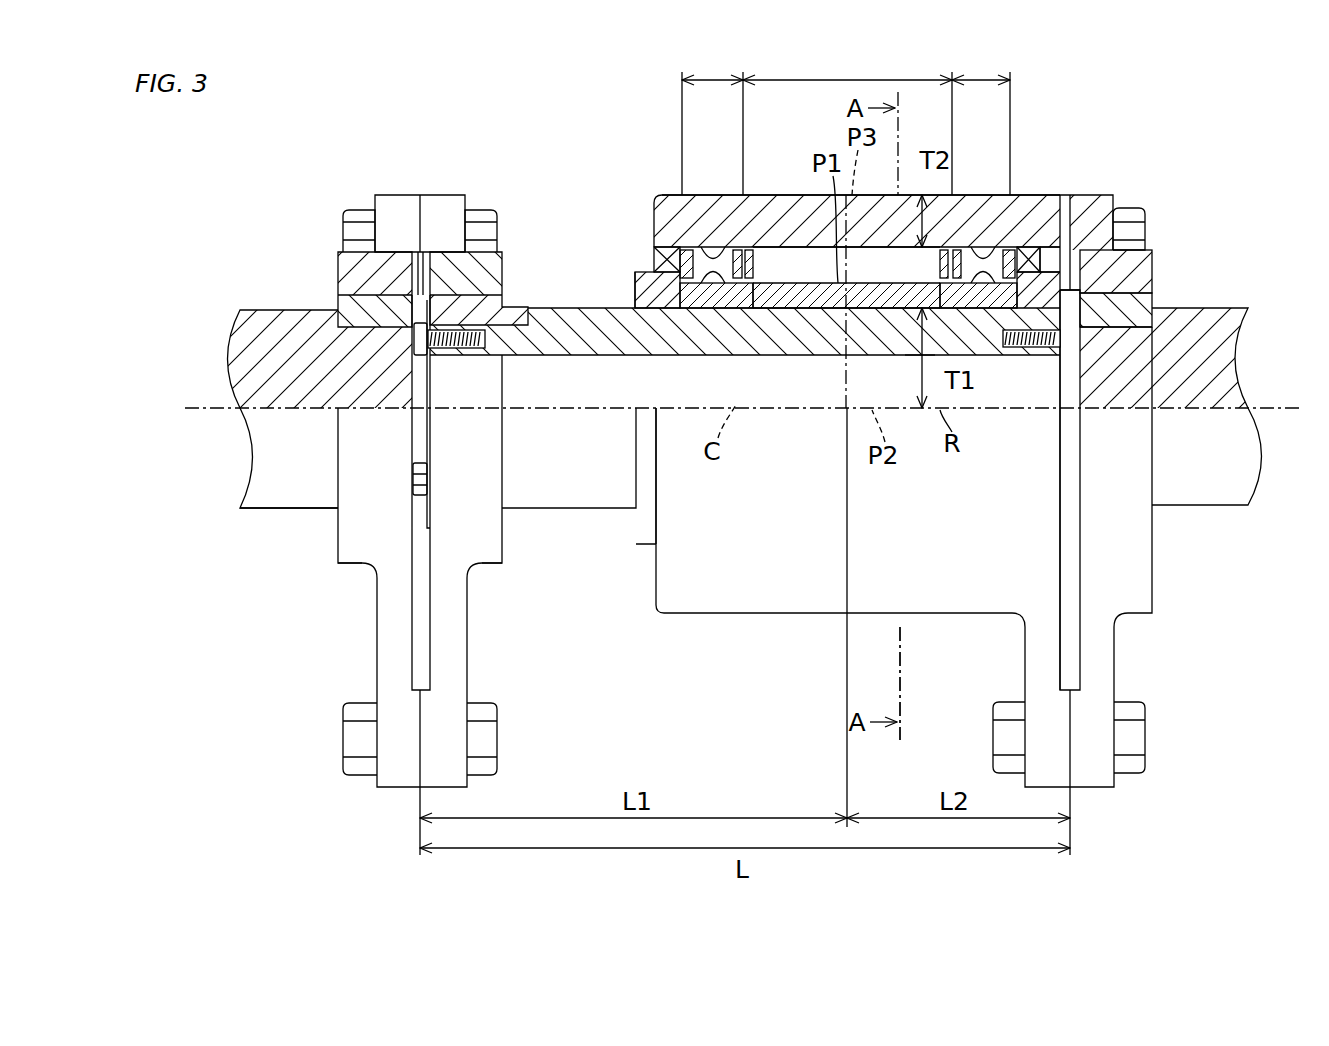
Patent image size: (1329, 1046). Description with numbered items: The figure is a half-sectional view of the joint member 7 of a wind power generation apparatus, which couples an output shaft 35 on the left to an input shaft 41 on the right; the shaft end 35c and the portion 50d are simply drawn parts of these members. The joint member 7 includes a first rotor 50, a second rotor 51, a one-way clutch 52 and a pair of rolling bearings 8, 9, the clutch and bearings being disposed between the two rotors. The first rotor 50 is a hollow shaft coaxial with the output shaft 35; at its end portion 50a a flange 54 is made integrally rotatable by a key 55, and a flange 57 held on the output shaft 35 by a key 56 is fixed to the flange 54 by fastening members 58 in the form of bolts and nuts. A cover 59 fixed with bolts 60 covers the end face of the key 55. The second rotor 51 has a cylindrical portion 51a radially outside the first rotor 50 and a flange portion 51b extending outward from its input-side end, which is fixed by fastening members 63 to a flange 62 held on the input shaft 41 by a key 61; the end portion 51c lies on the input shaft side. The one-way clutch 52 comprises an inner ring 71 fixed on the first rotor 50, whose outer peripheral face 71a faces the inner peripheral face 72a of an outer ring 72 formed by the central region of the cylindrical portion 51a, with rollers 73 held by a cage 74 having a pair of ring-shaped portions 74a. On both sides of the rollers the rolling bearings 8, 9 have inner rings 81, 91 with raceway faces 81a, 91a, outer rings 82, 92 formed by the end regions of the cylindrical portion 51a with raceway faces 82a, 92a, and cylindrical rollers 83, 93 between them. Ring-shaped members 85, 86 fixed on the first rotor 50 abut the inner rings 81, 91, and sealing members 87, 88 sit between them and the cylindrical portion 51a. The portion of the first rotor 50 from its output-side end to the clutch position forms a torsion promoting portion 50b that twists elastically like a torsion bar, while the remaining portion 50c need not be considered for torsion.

The output shaft 35 is at (247, 283).
The shaft end portion 35c is at (298, 490).
The input shaft 41 is at (1240, 285).
The first rotor 50 is at (570, 298).
The end portion 50a is at (437, 383).
The torsion promoting portion 50b is at (603, 385).
The remaining portion 50c is at (918, 410).
The hub flange 50d is at (1050, 377).
The second rotor 51 is at (907, 193).
The cylindrical portion 51a is at (788, 193).
The flange portion 51b is at (1058, 650).
The end portion 51c is at (1050, 240).
The one-way clutch 52 is at (800, 405).
The flange 54 is at (482, 553).
The key 55 is at (488, 310).
The key 56 is at (355, 302).
The flange 57 is at (362, 552).
The fastening members 58 is at (360, 743).
The cover 59 is at (425, 444).
The bolts 60 is at (418, 478).
The key 61 is at (1137, 303).
The flange 62 is at (1133, 550).
The fastening members 63 is at (1130, 743).
The joint member 7 is at (921, 634).
The rolling bearing 8 is at (711, 245).
The rolling bearing 9 is at (984, 245).
The inner ring 71 is at (795, 312).
The outer peripheral face 71a is at (866, 283).
The outer ring 72 is at (846, 178).
The inner peripheral face 72a is at (878, 300).
The rollers 73 is at (842, 300).
The cage 74 is at (750, 245).
The ring-shaped portions 74a is at (752, 290).
The inner ring 81 is at (735, 297).
The inner ring raceway face 81a is at (702, 290).
The outer ring 82 is at (715, 85).
The outer ring raceway face 82a is at (700, 243).
The cylindrical rollers 83 is at (678, 287).
The ring-shaped member 85 is at (657, 295).
The ring-shaped member 86 is at (1090, 273).
The sealing member 87 is at (657, 262).
The sealing member 88 is at (1062, 250).
The inner ring 91 is at (1053, 410).
The inner ring raceway face 91a is at (1032, 300).
The outer ring 92 is at (1005, 85).
The outer ring raceway face 92a is at (992, 268).
The cylindrical rollers 93 is at (1020, 262).